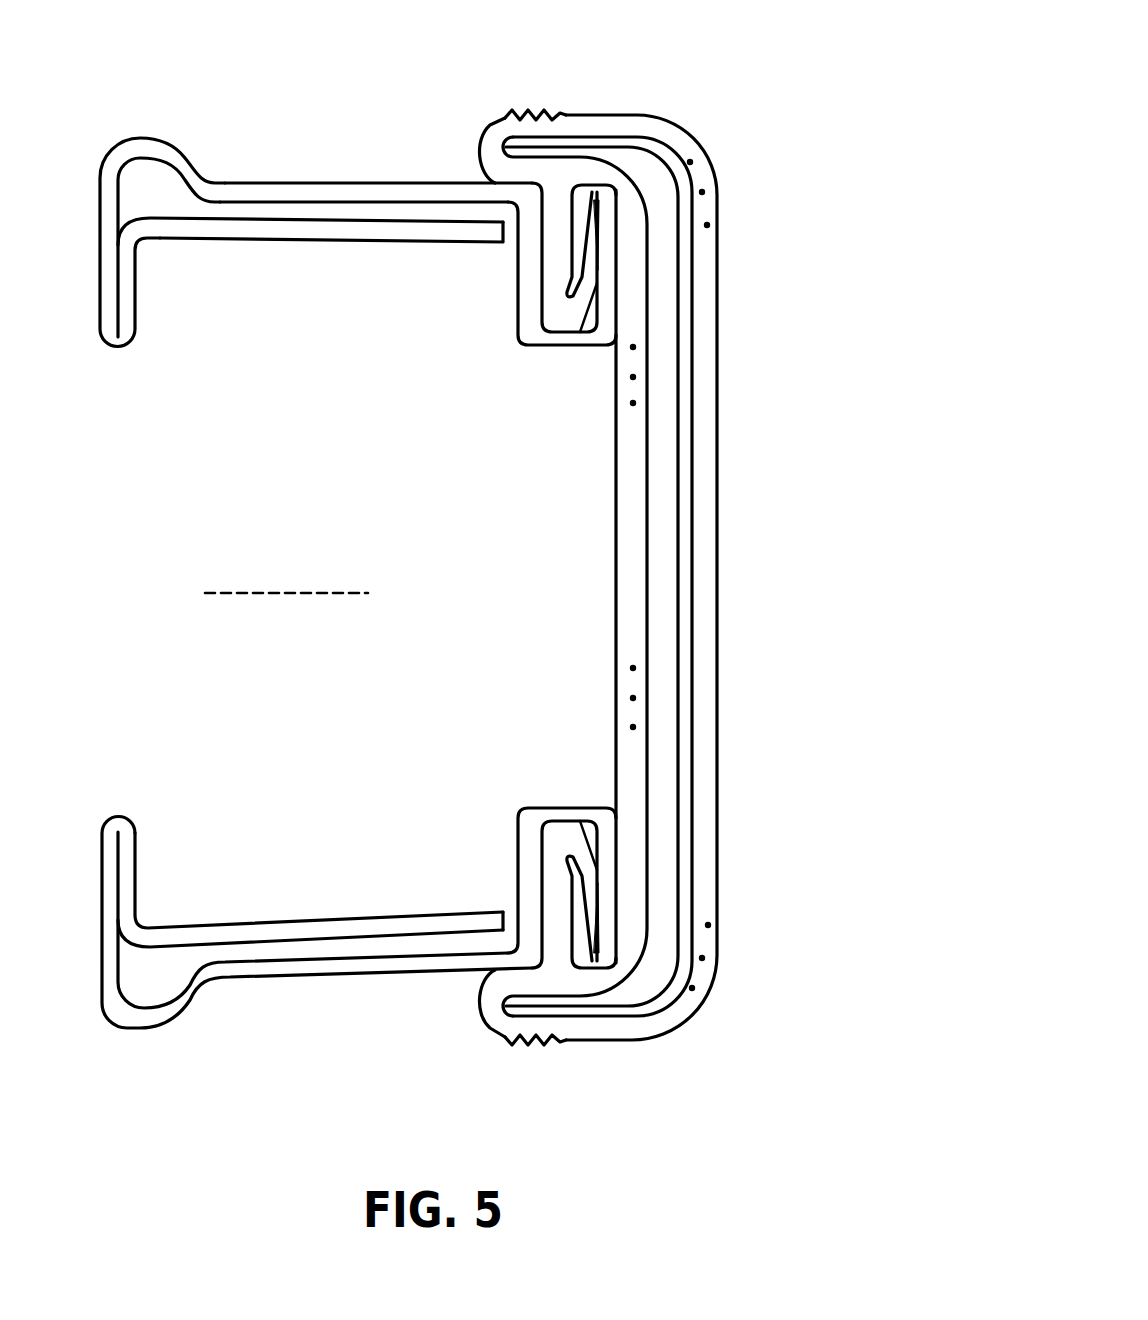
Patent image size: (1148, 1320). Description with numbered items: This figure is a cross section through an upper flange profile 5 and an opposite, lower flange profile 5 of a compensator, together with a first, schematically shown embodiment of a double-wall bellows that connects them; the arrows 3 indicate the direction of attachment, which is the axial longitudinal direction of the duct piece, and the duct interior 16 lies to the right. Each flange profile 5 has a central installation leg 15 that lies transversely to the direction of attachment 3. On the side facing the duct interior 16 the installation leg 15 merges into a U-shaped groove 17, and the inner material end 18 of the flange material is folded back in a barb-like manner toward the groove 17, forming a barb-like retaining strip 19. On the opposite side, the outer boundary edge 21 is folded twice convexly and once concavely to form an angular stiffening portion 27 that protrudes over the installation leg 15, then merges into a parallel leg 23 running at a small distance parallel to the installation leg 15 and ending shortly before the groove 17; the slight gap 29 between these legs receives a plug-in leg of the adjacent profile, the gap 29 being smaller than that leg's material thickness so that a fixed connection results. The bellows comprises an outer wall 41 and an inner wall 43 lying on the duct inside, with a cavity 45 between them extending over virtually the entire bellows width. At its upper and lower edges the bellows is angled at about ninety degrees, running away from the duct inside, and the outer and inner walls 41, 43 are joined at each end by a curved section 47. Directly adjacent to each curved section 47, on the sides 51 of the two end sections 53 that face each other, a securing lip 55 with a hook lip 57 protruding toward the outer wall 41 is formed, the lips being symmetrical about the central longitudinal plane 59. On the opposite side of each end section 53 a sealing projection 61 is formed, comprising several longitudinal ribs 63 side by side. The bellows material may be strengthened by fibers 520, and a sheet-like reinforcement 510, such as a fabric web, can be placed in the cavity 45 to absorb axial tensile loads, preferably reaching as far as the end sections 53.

The direction of attachment 3 is at (823, 40).
The flange profile 5 is at (258, 118).
The installation leg 15 is at (317, 190).
The duct interior 16 is at (813, 593).
The U-shaped groove 17 is at (560, 268).
The inner material end 18 is at (600, 262).
The barb-like retaining strip 19 is at (588, 253).
The outer boundary edge 21 is at (490, 236).
The parallel leg 23 is at (233, 234).
The angular stiffening portion 27 is at (143, 118).
The gap 29 is at (338, 214).
The outer wall 41 is at (620, 536).
The inner wall 43 is at (708, 505).
The cavity 45 is at (675, 617).
The curved section 47 is at (483, 147).
The sides 51 is at (520, 178).
The end sections 53 is at (458, 139).
The securing lip 55 is at (568, 292).
The hook lip 57 is at (592, 287).
The central longitudinal plane 59 is at (230, 596).
The sealing projection 61 is at (548, 85).
The longitudinal ribs 63 is at (541, 1047).
The sheet-like reinforcement 510 is at (680, 455).
The fibers 520 is at (703, 191).